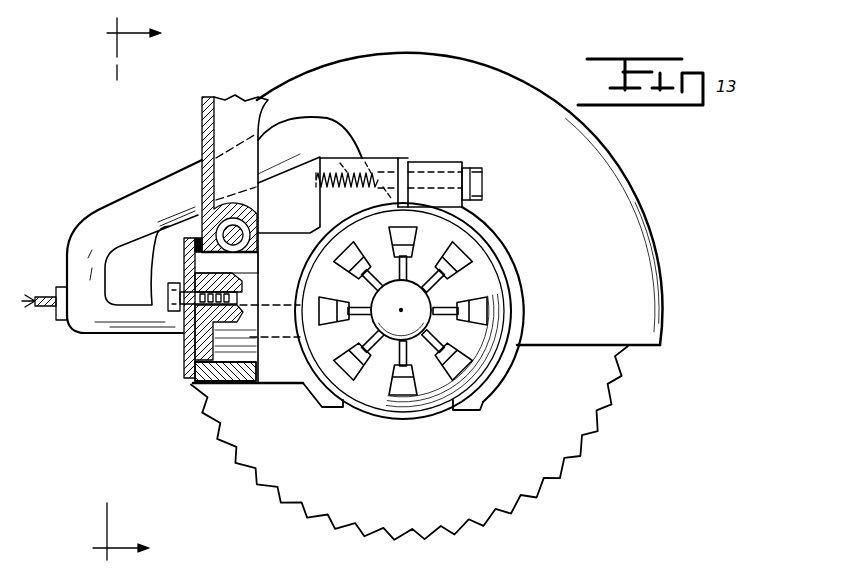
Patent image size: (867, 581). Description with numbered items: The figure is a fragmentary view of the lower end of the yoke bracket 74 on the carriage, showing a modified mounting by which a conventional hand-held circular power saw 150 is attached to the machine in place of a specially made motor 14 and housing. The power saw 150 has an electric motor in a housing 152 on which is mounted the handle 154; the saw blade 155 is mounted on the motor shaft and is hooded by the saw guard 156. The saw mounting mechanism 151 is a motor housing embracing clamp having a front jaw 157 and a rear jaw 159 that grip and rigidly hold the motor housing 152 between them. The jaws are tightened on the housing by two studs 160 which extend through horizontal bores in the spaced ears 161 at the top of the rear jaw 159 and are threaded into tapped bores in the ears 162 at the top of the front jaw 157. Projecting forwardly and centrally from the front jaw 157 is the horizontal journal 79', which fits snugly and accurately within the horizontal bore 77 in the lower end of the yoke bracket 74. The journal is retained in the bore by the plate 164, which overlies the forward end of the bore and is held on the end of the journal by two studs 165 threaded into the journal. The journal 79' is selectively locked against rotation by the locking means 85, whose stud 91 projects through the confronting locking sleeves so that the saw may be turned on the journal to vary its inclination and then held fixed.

The motor 14 is at (138, 289).
The yoke bracket 74 is at (212, 96).
The central horizontal bore 77 is at (230, 400).
The horizontal journal 79' is at (208, 399).
The locking means 85 is at (244, 259).
The stud 91 is at (252, 225).
The circular power saw 150 is at (393, 427).
The saw mounting mechanism 151 is at (325, 414).
The motor housing 152 is at (435, 408).
The handle 154 is at (150, 197).
The saw blade 155 is at (518, 472).
The saw guard 156 is at (615, 258).
The front jaw 157 is at (288, 298).
The rear jaw 159 is at (514, 296).
The studs 160 is at (404, 170).
The spaced ears 161 is at (450, 168).
The ears 162 is at (376, 160).
The plate 164 is at (172, 364).
The studs 165 is at (172, 290).